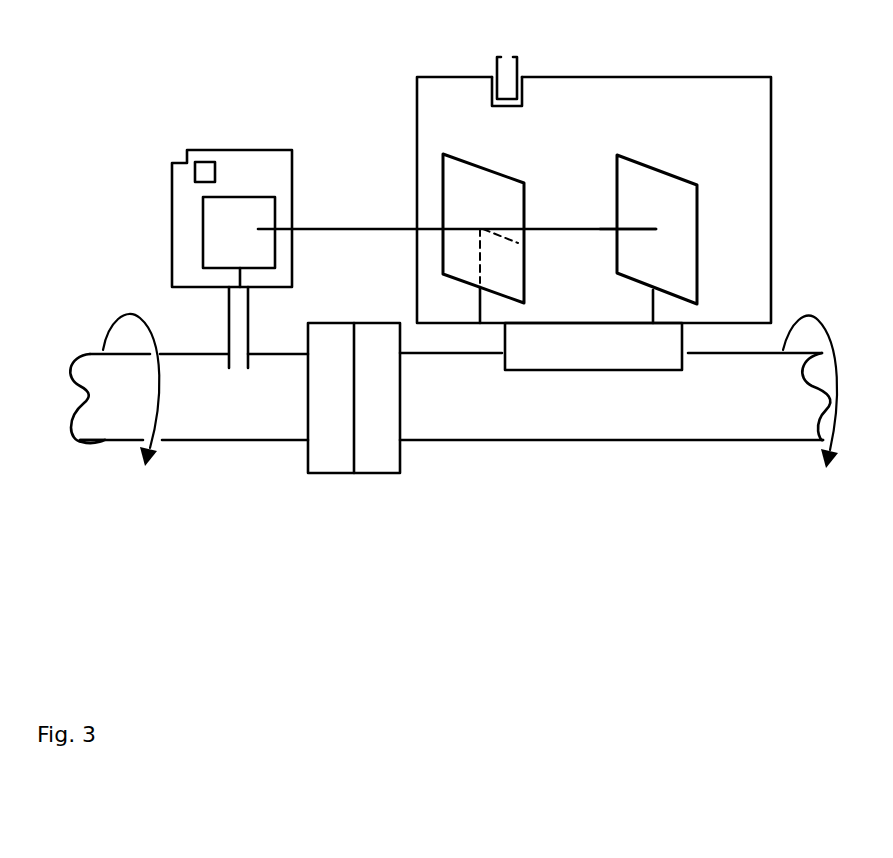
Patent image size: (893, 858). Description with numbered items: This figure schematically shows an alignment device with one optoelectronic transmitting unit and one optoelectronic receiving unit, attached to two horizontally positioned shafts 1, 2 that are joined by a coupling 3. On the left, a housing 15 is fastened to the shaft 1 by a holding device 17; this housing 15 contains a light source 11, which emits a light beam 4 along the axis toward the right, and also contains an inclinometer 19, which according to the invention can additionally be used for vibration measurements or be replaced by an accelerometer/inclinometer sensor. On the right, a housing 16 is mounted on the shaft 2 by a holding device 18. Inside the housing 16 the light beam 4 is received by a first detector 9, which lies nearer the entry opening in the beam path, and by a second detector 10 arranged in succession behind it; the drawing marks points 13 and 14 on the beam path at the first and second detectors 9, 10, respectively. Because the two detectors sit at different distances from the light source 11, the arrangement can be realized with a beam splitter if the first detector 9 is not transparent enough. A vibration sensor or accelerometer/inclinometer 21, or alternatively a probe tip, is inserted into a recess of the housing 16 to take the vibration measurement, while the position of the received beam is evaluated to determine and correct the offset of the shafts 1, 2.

The shaft 1 is at (203, 420).
The shaft 2 is at (700, 420).
The coupling 3 is at (378, 447).
The light beam 4 is at (315, 229).
The first detector 9 is at (507, 213).
The second detector 10 is at (677, 211).
The light source 11 is at (238, 212).
The reflection point on first mirror 13 is at (483, 228).
The reflection point on second mirror 14 is at (656, 229).
The housing 15 is at (273, 148).
The housing 16 is at (608, 91).
The holding device 17 is at (240, 355).
The holding device 18 is at (573, 343).
The inclinometer 19 is at (200, 167).
The vibration sensor or accelerometer/inclinometer 21 is at (508, 63).